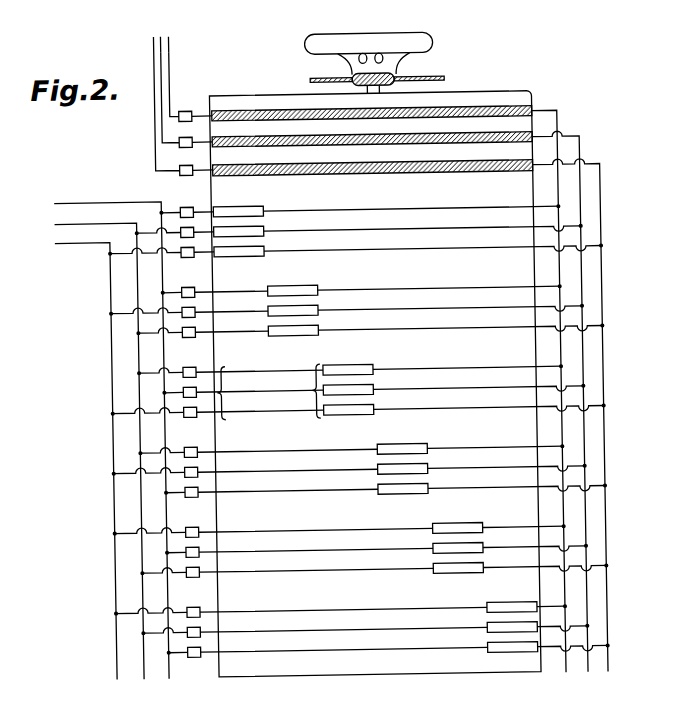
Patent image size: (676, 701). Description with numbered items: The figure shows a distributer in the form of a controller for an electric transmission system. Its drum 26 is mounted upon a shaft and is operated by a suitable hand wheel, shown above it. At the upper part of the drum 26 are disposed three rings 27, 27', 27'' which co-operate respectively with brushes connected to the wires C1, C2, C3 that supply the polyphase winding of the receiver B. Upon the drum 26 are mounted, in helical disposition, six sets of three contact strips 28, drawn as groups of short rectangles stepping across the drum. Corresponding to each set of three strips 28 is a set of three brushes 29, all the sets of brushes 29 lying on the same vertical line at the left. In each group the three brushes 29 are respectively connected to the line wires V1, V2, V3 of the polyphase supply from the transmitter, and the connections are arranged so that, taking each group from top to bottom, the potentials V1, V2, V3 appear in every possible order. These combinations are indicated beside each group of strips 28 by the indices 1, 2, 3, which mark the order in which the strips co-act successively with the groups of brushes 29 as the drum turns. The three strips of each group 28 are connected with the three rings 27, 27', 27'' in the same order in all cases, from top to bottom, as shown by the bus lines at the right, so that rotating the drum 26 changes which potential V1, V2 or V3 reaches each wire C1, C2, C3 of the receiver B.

The drum 26 is at (278, 97).
The ring 27 is at (370, 75).
The ring 27' is at (373, 88).
The ring 27'' is at (397, 102).
The set of three contact strips 28 is at (311, 407).
The set of three brushes 29 is at (221, 384).
The receiver B is at (158, 32).
The wire C1 is at (172, 78).
The wire C2 is at (164, 50).
The wire C3 is at (156, 82).
The line wire V1 is at (101, 437).
The line wire V2 is at (89, 448).
The line wire V3 is at (76, 460).
The combination index 1 is at (382, 423).
The combination index 2 is at (382, 423).
The combination index 3 is at (383, 423).